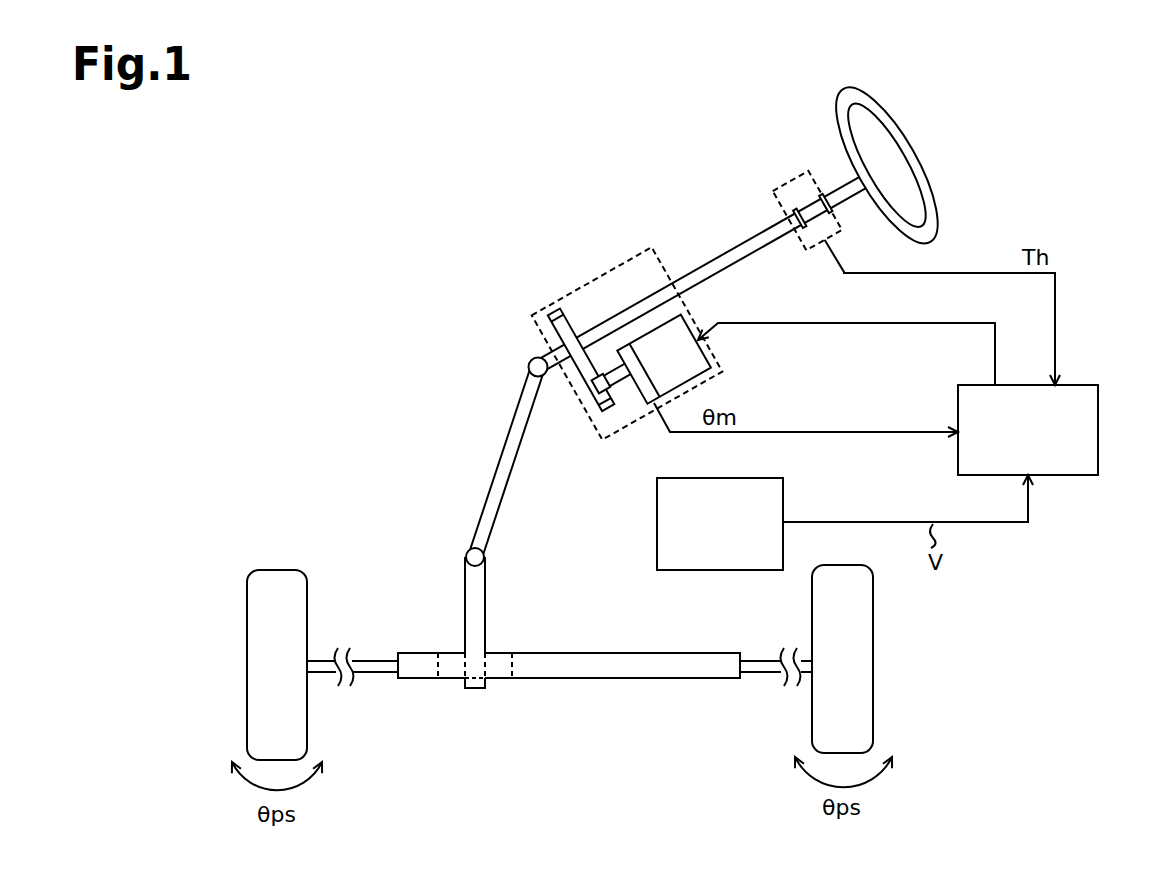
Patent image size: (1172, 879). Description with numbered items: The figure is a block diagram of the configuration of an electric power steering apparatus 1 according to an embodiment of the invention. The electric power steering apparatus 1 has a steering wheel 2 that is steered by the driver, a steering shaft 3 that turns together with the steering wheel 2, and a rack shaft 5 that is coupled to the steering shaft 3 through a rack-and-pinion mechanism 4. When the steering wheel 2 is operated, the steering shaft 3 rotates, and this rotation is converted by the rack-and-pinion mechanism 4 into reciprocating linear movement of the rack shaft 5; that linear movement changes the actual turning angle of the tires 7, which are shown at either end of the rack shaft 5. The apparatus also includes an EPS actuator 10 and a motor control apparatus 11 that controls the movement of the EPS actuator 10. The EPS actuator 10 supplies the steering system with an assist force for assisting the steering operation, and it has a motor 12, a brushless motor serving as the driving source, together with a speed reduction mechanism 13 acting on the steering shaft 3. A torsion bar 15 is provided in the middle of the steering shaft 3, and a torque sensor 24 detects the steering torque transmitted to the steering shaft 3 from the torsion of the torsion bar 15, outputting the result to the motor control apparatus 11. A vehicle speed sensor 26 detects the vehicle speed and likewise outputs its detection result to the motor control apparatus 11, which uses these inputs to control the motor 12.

The electric power steering apparatus 1 is at (1142, 110).
The steering wheel 2 is at (912, 140).
The steering shaft 3 is at (516, 464).
The rack-and-pinion mechanism 4 is at (497, 658).
The rack shaft 5 is at (562, 652).
The steered wheels 7 is at (277, 568).
The EPS actuator 10 is at (592, 283).
The motor control apparatus 11 is at (1100, 430).
The motor 12 is at (664, 359).
The speed reduction mechanism 13 is at (583, 408).
The torsion bar 15 is at (786, 199).
The torque sensor 24 is at (780, 180).
The vehicle speed sensor 26 is at (657, 522).